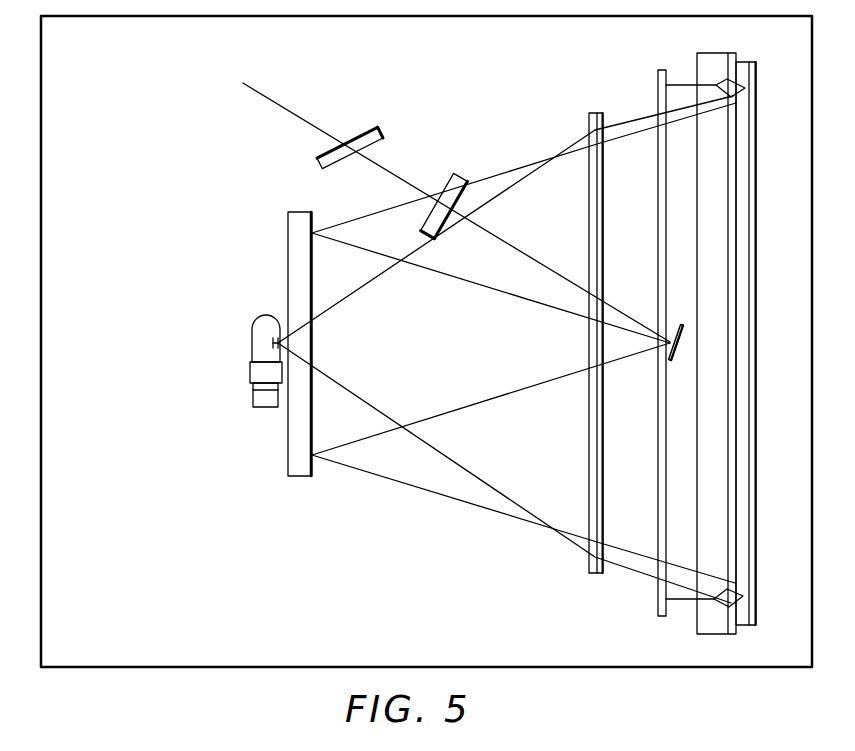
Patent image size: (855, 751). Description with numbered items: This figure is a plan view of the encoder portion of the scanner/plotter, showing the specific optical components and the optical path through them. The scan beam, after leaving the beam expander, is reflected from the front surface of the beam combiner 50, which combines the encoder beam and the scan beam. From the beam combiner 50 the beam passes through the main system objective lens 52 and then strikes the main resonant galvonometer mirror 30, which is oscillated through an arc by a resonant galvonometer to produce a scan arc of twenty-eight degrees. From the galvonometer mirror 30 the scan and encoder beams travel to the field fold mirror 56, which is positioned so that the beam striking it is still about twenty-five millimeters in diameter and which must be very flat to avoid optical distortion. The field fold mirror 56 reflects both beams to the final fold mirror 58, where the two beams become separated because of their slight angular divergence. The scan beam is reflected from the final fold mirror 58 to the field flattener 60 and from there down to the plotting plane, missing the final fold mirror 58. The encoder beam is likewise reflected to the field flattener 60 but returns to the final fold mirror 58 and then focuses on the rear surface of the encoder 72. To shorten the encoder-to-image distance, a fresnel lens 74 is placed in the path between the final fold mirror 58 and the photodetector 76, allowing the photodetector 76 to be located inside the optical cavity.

The main resonant galvonometer mirror 30 is at (680, 347).
The beam combiner 50 is at (381, 127).
The main system objective lens 52 is at (454, 172).
The field fold mirror 56 is at (295, 457).
The final fold mirror 58 is at (744, 66).
The field flattener 60 is at (718, 58).
The encoder 72 is at (662, 70).
The fresnel lens 74 is at (597, 113).
The photodetector 76 is at (256, 351).